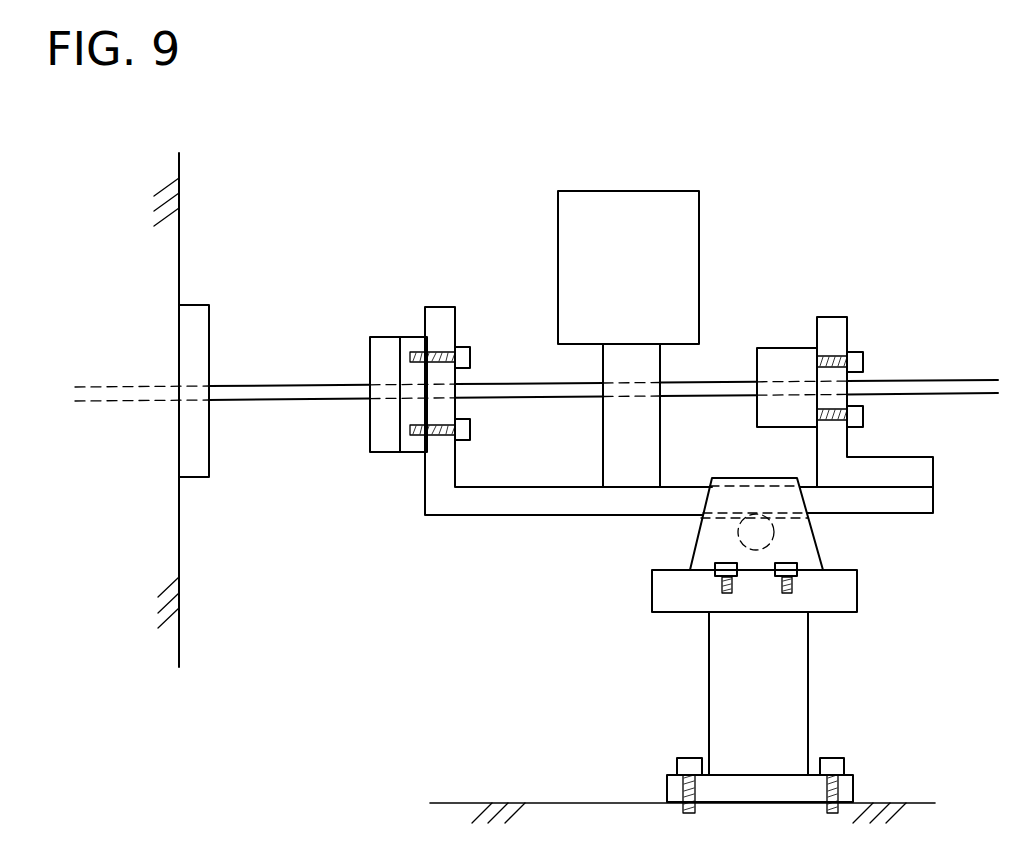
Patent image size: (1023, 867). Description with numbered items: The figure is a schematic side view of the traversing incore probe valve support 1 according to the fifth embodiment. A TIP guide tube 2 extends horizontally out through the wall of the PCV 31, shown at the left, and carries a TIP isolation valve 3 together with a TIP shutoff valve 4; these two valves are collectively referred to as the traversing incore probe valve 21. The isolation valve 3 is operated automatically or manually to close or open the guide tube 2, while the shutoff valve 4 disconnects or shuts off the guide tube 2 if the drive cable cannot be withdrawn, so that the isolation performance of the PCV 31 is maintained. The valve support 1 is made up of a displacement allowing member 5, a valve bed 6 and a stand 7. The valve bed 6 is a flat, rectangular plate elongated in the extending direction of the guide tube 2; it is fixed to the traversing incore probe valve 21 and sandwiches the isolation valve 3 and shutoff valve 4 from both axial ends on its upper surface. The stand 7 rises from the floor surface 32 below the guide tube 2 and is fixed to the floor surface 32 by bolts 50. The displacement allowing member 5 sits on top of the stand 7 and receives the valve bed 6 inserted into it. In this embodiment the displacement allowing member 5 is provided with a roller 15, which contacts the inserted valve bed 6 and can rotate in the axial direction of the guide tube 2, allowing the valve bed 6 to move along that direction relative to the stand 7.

The traversing incore probe valve support 1 is at (536, 501).
The TIP guide tube 2 is at (305, 393).
The TIP isolation valve 3 is at (653, 372).
The TIP shutoff valve 4 is at (782, 355).
The displacement allowing member 5 is at (767, 528).
The valve bed 6 is at (548, 505).
The stand 7 is at (767, 657).
The roller 15 is at (765, 533).
The traversing incore probe valve 21 is at (698, 338).
The PCV 31 is at (163, 293).
The floor surface 32 is at (555, 822).
The bolts 50 is at (832, 765).